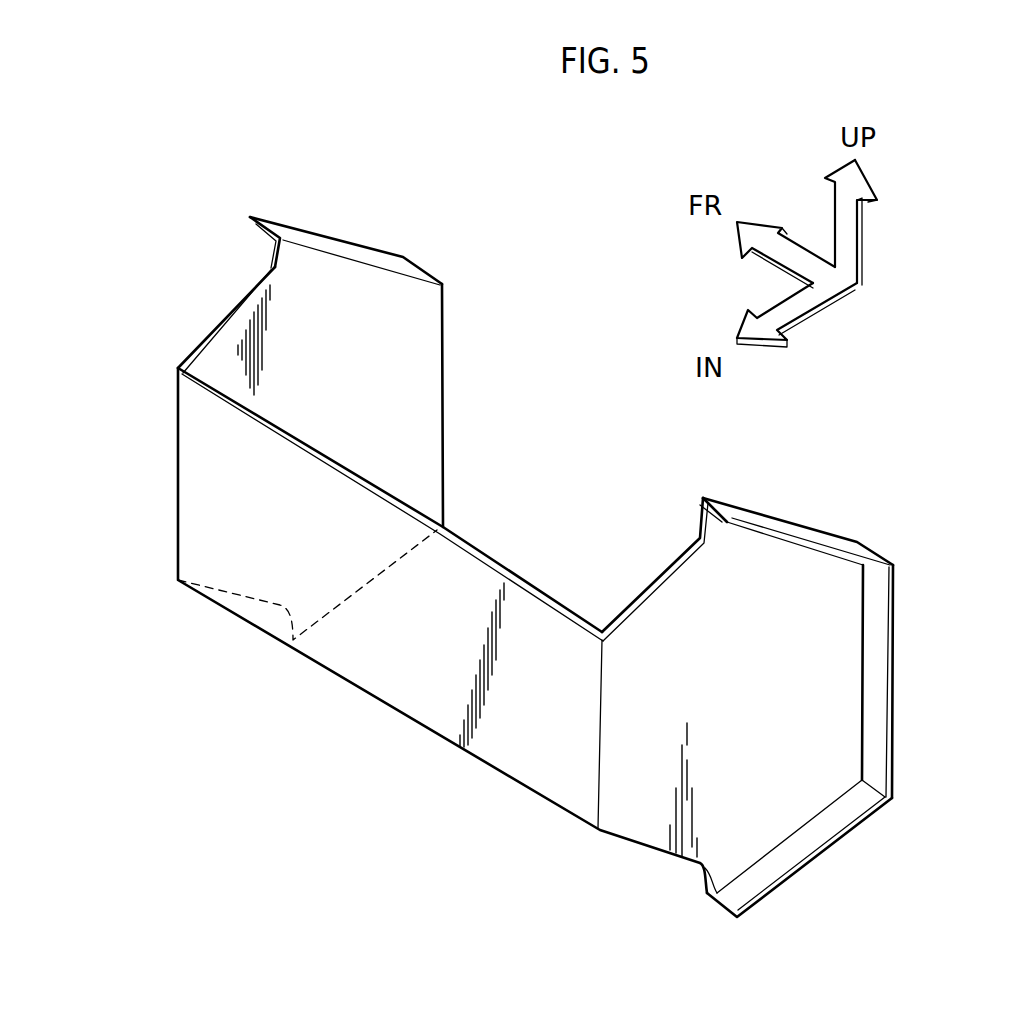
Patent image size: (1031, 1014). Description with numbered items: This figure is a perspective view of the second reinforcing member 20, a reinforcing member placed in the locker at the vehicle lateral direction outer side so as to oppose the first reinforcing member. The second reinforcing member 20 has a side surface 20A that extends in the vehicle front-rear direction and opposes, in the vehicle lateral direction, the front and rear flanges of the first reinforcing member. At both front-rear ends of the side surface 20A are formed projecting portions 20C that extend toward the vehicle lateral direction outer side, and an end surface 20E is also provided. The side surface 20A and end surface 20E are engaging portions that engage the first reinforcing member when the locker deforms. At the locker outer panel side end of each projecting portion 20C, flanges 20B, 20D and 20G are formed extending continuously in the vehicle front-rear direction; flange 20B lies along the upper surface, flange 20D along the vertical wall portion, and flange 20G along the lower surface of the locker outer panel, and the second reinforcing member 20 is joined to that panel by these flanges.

The second reinforcing member 20 is at (408, 253).
The side surface 20A is at (408, 668).
The flange 20B is at (310, 235).
The projecting portion 20C is at (427, 452).
The flange 20D is at (897, 705).
The end surface 20E is at (210, 328).
The flange 20G is at (830, 847).